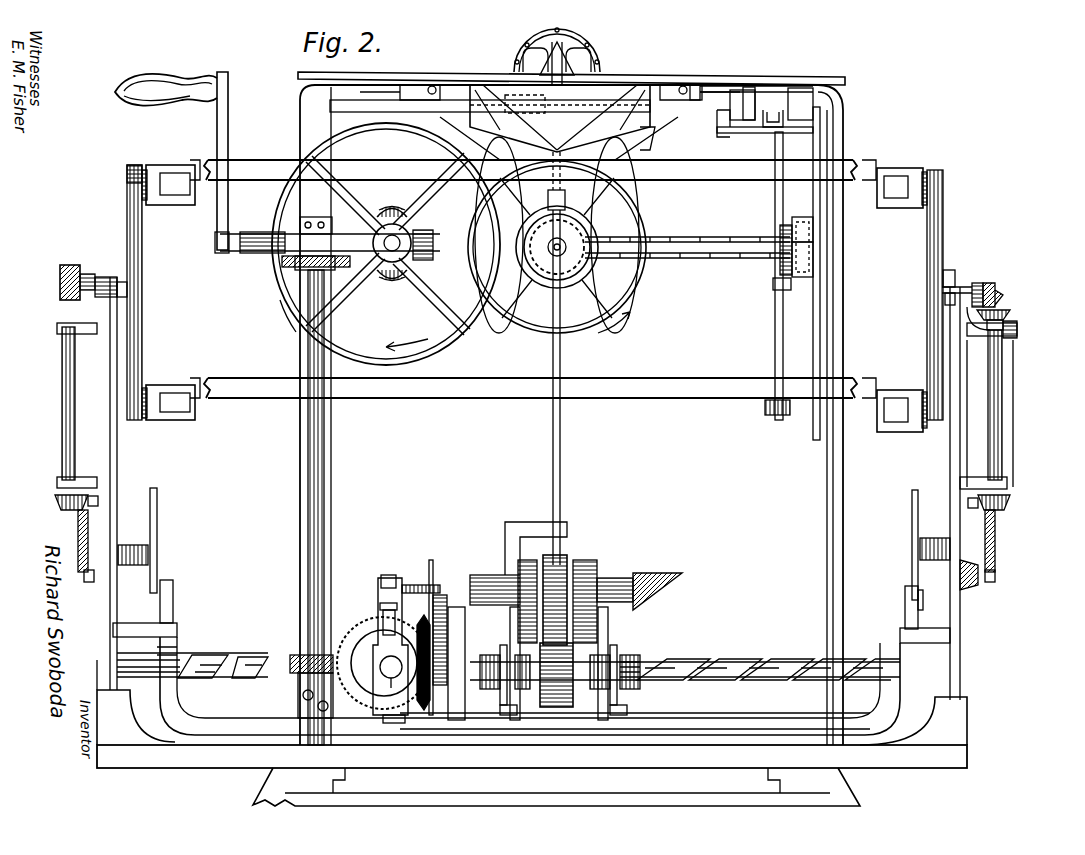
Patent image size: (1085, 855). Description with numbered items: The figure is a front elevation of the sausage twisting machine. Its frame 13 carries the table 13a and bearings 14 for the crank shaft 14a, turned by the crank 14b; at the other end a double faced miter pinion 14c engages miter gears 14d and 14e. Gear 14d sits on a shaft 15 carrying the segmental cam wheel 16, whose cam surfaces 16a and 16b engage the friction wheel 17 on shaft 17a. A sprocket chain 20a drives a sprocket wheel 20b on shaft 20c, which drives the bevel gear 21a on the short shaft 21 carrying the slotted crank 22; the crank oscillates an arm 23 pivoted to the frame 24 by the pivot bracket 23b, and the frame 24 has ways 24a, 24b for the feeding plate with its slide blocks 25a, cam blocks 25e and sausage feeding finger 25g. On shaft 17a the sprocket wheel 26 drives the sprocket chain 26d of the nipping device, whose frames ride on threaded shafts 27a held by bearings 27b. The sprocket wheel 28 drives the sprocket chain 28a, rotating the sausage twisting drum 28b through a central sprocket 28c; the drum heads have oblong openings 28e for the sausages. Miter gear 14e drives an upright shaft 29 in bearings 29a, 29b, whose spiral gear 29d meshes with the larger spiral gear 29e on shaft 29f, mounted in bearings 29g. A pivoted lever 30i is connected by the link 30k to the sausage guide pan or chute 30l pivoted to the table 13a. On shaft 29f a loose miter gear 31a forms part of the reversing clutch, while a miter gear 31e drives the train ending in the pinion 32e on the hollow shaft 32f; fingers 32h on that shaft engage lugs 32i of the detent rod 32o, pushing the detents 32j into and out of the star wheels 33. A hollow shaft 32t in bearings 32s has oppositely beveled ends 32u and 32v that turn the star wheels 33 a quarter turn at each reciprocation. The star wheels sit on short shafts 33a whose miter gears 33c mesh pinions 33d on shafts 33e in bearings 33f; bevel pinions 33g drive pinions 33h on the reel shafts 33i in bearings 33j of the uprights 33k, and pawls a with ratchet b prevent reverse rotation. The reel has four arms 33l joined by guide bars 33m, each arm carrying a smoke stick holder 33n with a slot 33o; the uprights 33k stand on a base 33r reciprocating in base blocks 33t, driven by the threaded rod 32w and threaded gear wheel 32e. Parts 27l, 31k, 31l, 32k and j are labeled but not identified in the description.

The frame 13 is at (302, 124).
The table 13a is at (330, 73).
The bearings 14 is at (305, 220).
The crank shaft 14a is at (262, 252).
The crank 14b is at (227, 120).
The double faced miter pinion 14c is at (396, 207).
The miter gear 14d is at (393, 285).
The miter gear 14e is at (290, 264).
The shaft 15 is at (394, 240).
The segmental cam wheel 16 is at (362, 133).
The cam surface 16a is at (518, 238).
The cam surface 16b is at (290, 317).
The friction wheel 17 is at (572, 281).
The shaft 17a is at (545, 272).
The sprocket chain 20a is at (735, 237).
The sprocket wheel 20b is at (815, 232).
The shaft 20c is at (815, 246).
The short shaft 21 is at (805, 262).
The bevel gear 21a is at (781, 260).
The slotted crank 22 is at (774, 284).
The arm 23 is at (775, 202).
The pivot bracket 23b is at (780, 416).
The frame 24 is at (822, 124).
The way 24a is at (790, 134).
The way 24b is at (757, 133).
The slide blocks 25a is at (652, 122).
The cam blocks 25e is at (800, 92).
The sausage feeding finger 25g is at (560, 104).
The sprocket wheel 26 is at (590, 263).
The sprocket chain 26d is at (648, 148).
The shafts 27a is at (420, 94).
The bearings 27b is at (428, 87).
The bracket arm 27l is at (694, 85).
The sprocket wheel 28 is at (644, 226).
The sprocket chain 28a is at (636, 207).
The sausage twisting drum 28b is at (598, 50).
The sprocket 28c is at (540, 38).
The oblong openings 28e is at (527, 60).
The upright shaft 29 is at (326, 446).
The bearing 29a is at (304, 268).
The bearing 29b is at (304, 682).
The spiral gear 29d is at (300, 655).
The larger spiral gear 29e is at (362, 622).
The shaft 29f is at (390, 646).
The bearings 29g is at (400, 723).
The pivoted lever 30i is at (561, 450).
The link 30k is at (566, 192).
The sausage guide pan or chute 30l is at (559, 122).
The miter gear 31a is at (367, 655).
The miter gear 31e is at (432, 716).
The lever rod 31k is at (437, 590).
The pin 31l is at (388, 575).
The pinion 32e is at (575, 655).
The hollow shaft 32f is at (502, 700).
The fingers 32h is at (548, 716).
The lugs 32i is at (222, 716).
The detents or restrainers 32j is at (172, 602).
The bracket 32k is at (566, 560).
The detent or restrainer rod 32o is at (712, 728).
The bearings 32s is at (522, 574).
The hollow shaft 32t is at (608, 578).
The beveled end 32u is at (478, 582).
The beveled end 32v is at (650, 584).
The threaded rod 32w is at (758, 662).
The star wheels 33 is at (157, 532).
The short shafts 33a is at (960, 570).
The miter gears 33c is at (80, 536).
The pinions 33d is at (56, 506).
The shafts 33e is at (66, 420).
The bearings 33f is at (57, 328).
The bevel pinions 33g is at (62, 276).
The pinions 33h is at (176, 171).
The reel shafts 33i is at (127, 289).
The bearings 33j is at (125, 283).
The upright 33k is at (108, 444).
The arms 33l is at (128, 205).
The guide bars 33m is at (533, 279).
The smoke stick holder 33n is at (176, 388).
The slot 33o is at (170, 184).
The base 33r is at (532, 717).
The base blocks 33t is at (204, 762).
The pawls a is at (98, 501).
The ratchet b is at (543, 587).
The pin j is at (901, 592).